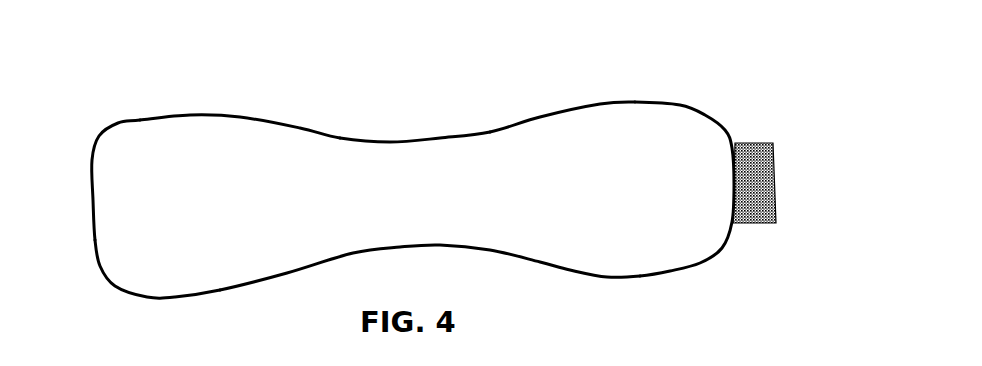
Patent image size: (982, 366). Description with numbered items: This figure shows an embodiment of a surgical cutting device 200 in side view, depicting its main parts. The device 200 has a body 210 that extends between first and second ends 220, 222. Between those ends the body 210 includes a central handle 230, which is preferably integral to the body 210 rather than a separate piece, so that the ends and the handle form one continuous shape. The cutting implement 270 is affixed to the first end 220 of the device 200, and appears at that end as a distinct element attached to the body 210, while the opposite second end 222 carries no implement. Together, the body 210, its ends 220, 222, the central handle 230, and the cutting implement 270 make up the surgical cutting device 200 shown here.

The surgical cutting device 200 is at (450, 183).
The body 210 is at (277, 100).
The first end 220 is at (732, 128).
The second end 222 is at (90, 269).
The central handle 230 is at (403, 137).
The cutting implement 270 is at (782, 202).